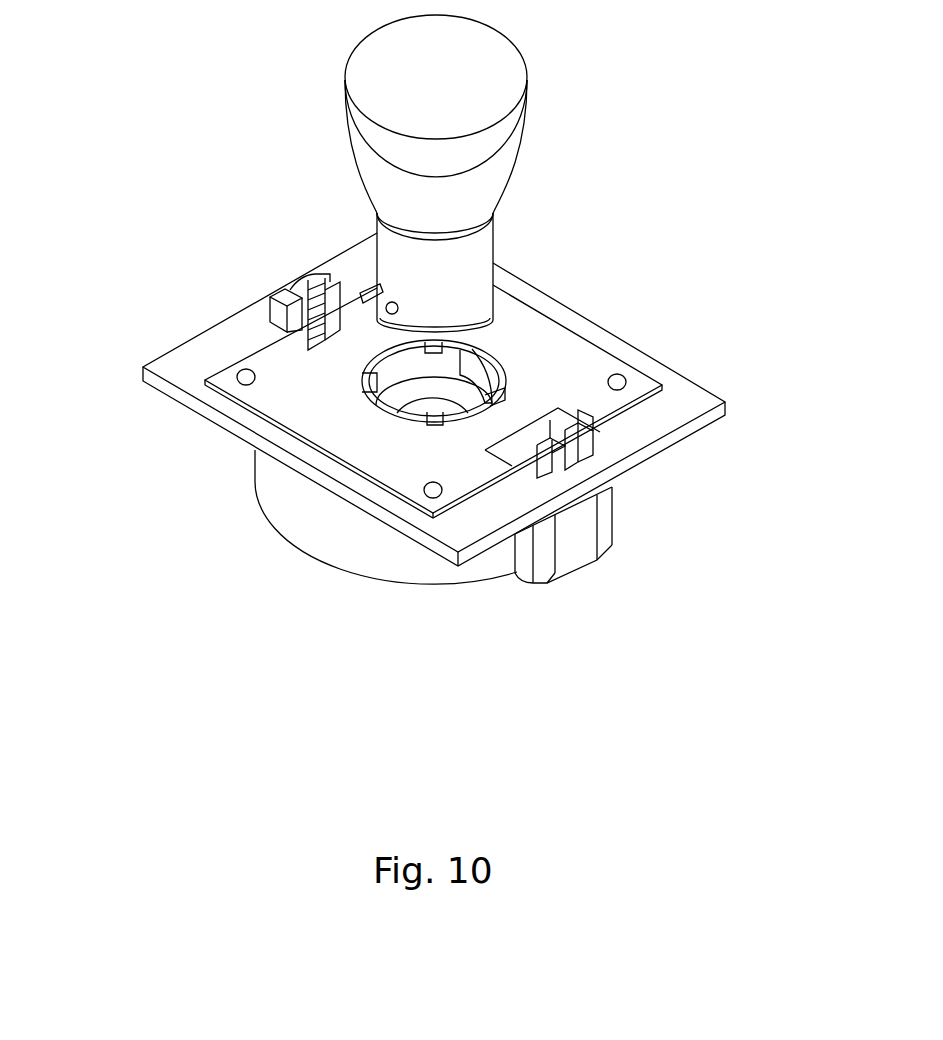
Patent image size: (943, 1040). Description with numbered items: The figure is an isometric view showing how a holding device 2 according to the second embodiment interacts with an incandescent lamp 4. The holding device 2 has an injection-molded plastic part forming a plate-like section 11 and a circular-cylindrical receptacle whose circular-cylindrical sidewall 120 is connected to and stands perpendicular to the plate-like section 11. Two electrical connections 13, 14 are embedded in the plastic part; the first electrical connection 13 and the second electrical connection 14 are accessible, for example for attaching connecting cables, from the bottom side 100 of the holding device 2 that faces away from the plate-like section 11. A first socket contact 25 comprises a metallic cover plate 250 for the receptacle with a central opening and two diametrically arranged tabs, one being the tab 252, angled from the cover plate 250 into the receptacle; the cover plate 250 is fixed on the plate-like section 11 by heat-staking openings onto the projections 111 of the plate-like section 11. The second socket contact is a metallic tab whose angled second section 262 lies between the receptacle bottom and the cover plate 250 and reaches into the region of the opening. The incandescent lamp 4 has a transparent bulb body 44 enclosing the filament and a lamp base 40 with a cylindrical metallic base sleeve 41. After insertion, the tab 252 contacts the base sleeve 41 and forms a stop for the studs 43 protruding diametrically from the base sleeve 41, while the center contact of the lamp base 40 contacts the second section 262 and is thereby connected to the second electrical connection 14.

The incandescent lamp 4 is at (327, 48).
The transparent bulb body 44 is at (510, 127).
The lamp base 40 is at (473, 255).
The base sleeve 41 is at (468, 277).
The studs 43 is at (372, 293).
The holding device 2 is at (207, 318).
The plate-like section 11 is at (470, 523).
The projections 111 is at (240, 384).
The first socket contact 25 is at (302, 403).
The cover plate 250 is at (383, 401).
The tab 252 is at (498, 355).
The second section 262 is at (433, 410).
The second electrical connection 14 is at (307, 277).
The first electrical connection 13 is at (560, 453).
The circular-cylindrical sidewall 120 is at (313, 522).
The bottom side 100 is at (577, 567).